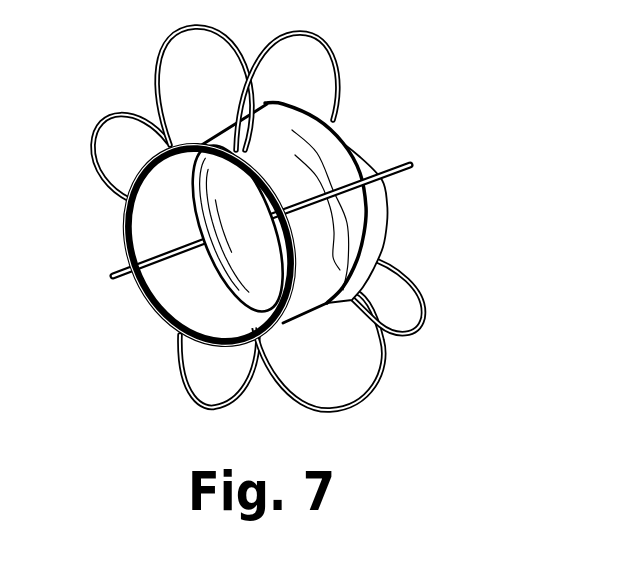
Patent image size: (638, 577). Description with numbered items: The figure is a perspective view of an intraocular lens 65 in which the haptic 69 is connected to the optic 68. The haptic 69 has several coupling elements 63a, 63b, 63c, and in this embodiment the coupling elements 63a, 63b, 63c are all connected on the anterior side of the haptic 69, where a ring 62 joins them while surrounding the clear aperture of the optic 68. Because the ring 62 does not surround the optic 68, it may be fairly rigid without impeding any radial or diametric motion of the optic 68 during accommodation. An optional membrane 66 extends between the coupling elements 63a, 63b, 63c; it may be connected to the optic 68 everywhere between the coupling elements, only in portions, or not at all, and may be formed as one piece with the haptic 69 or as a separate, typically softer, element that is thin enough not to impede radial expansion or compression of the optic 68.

The ring 62 is at (140, 312).
The coupling element 63a is at (400, 333).
The coupling element 63b is at (347, 413).
The coupling element 63c is at (190, 399).
The intraocular lens 65 is at (93, 76).
The membrane 66 is at (343, 216).
The optic 68 is at (389, 208).
The haptic 69 is at (338, 52).